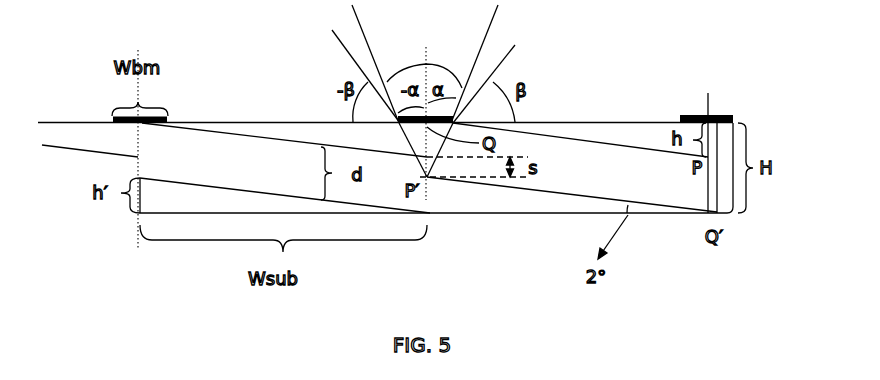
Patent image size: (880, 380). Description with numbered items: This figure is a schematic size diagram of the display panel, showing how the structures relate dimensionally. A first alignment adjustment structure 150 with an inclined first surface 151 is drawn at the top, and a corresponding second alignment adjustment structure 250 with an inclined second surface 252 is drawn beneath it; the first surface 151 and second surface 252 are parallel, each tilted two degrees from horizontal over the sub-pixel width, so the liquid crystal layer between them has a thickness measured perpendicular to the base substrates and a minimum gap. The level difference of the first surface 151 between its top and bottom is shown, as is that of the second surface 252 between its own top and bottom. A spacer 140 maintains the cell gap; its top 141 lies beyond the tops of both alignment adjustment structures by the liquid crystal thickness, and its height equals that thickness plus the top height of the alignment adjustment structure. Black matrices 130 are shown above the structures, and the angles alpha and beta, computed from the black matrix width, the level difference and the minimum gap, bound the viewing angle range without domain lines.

The black matrix 130 is at (722, 115).
The spacer 140 is at (737, 178).
The top of spacer 141 is at (700, 211).
The first alignment adjustment structure 150 is at (322, 139).
The first surface 151 is at (262, 137).
The second alignment adjustment structure 250 is at (303, 208).
The second surface 252 is at (227, 190).